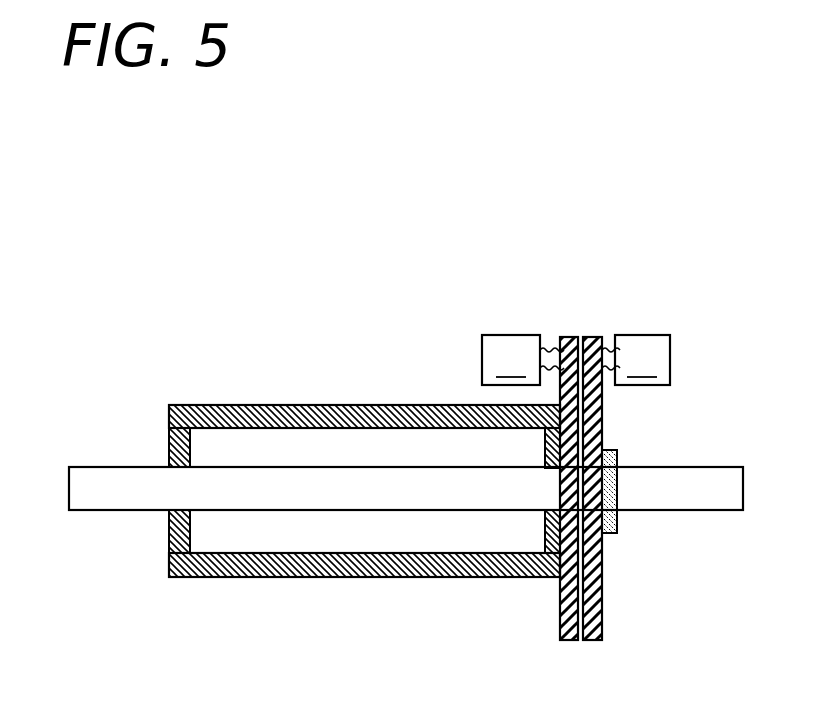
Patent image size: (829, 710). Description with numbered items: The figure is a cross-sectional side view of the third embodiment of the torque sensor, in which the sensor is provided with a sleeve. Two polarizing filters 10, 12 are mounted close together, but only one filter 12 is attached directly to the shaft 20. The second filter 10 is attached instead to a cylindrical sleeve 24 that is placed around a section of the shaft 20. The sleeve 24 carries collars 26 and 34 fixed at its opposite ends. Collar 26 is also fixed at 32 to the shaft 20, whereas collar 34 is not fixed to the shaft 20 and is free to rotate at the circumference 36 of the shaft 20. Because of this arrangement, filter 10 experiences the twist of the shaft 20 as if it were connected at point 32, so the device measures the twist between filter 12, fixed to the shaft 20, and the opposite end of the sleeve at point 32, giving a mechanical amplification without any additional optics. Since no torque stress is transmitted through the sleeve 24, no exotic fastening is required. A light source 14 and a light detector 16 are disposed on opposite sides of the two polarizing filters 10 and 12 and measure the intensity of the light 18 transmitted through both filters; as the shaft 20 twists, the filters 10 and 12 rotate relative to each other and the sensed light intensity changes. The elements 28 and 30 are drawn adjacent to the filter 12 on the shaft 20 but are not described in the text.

The polarizing filter 10 is at (560, 607).
The polarizing filter 12 is at (602, 592).
The light source 14 is at (642, 360).
The light detector 16 is at (511, 360).
The light 18 is at (548, 345).
The shaft 20 is at (433, 504).
The cylindrical sleeve 24 is at (340, 568).
The collar 26 is at (190, 547).
The retaining member 28 is at (603, 452).
The spacer 30 is at (615, 523).
The fixing point 32 is at (178, 470).
The collar 34 is at (545, 530).
The circumference of shaft 36 is at (558, 506).